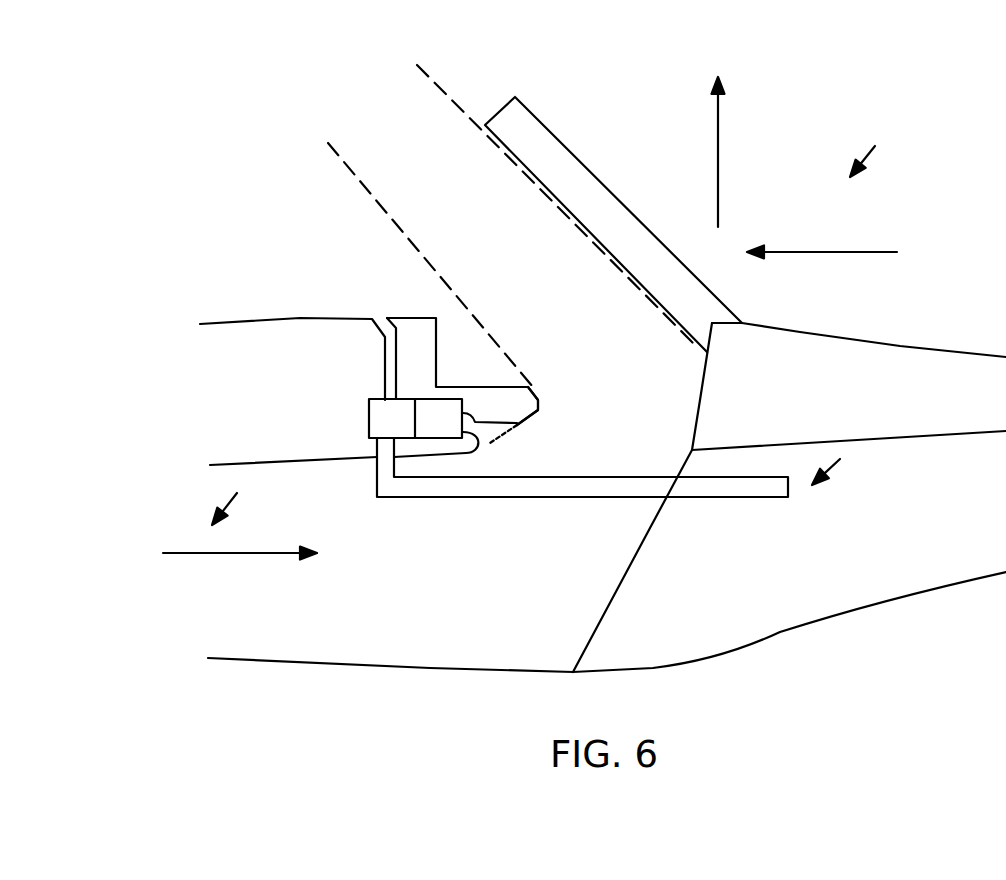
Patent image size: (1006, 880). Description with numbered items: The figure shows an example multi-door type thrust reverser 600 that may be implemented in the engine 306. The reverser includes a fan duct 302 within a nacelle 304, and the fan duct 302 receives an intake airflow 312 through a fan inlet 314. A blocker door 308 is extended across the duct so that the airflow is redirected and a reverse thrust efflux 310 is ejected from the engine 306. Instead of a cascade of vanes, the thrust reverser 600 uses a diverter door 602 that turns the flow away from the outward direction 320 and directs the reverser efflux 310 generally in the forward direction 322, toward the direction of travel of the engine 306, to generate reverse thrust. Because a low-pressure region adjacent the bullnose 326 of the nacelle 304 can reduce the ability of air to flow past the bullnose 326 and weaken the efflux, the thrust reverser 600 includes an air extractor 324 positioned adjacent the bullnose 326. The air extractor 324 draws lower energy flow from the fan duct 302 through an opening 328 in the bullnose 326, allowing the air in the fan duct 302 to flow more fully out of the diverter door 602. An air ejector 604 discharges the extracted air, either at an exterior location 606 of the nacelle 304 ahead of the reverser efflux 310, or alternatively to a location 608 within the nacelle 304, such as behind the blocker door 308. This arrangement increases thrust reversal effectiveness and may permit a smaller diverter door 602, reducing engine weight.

The fan duct 302 is at (602, 597).
The nacelle 304 is at (240, 320).
The engine 306 is at (875, 146).
The blocker door 308 is at (643, 540).
The reverse thrust efflux 310 is at (377, 202).
The intake airflow 312 is at (183, 552).
The fan inlet 314 is at (237, 493).
The outward direction 320 is at (718, 197).
The forward direction 322 is at (880, 252).
The air extractor 324 is at (440, 437).
The bullnose 326 is at (556, 421).
The opening 328 is at (528, 445).
The multi-door type thrust reverser 600 is at (192, 270).
The diverter door 602 is at (522, 103).
The air ejector 604 is at (368, 400).
The exterior location 606 is at (367, 299).
The location within the nacelle 608 is at (840, 459).